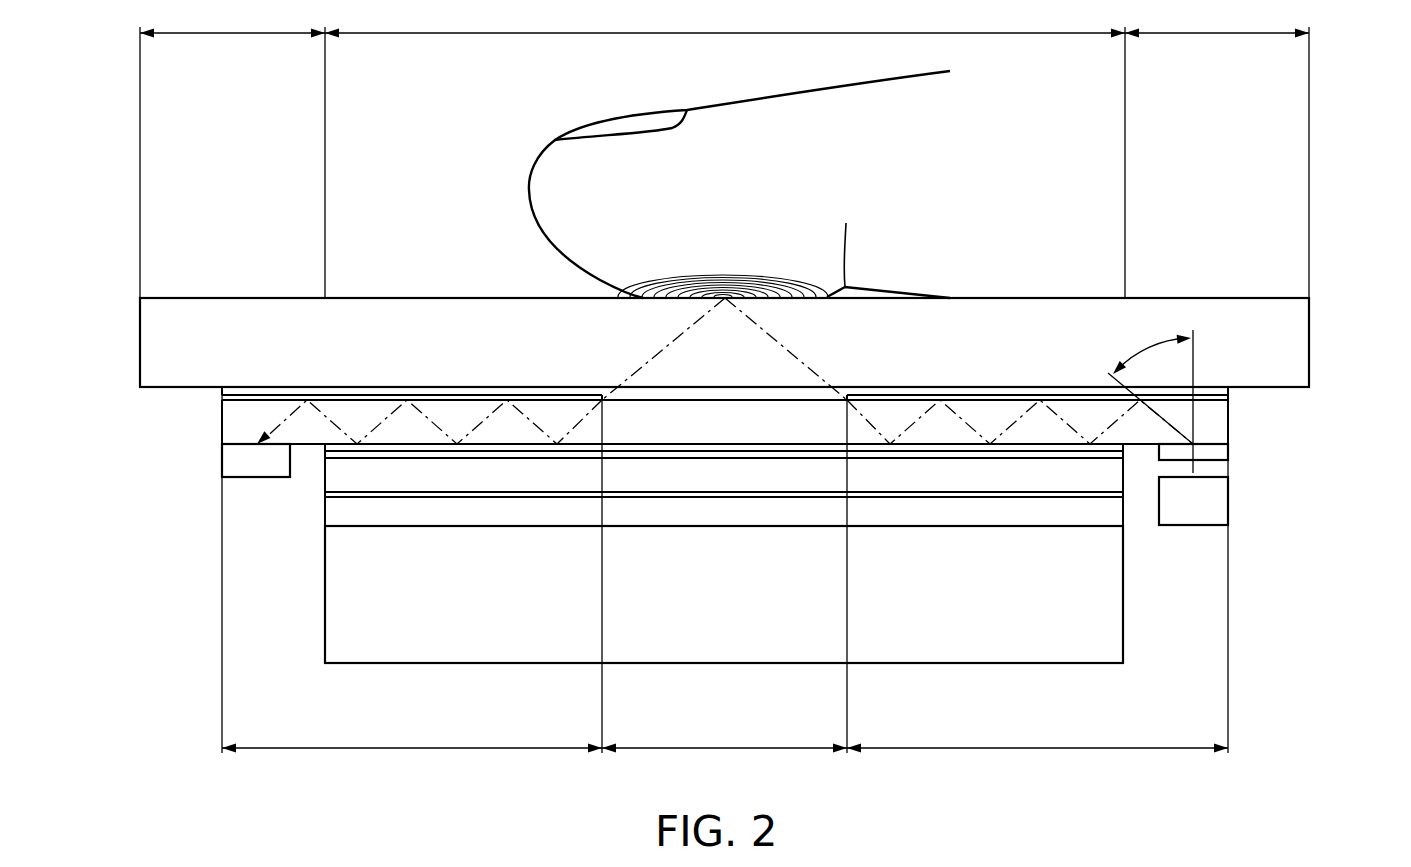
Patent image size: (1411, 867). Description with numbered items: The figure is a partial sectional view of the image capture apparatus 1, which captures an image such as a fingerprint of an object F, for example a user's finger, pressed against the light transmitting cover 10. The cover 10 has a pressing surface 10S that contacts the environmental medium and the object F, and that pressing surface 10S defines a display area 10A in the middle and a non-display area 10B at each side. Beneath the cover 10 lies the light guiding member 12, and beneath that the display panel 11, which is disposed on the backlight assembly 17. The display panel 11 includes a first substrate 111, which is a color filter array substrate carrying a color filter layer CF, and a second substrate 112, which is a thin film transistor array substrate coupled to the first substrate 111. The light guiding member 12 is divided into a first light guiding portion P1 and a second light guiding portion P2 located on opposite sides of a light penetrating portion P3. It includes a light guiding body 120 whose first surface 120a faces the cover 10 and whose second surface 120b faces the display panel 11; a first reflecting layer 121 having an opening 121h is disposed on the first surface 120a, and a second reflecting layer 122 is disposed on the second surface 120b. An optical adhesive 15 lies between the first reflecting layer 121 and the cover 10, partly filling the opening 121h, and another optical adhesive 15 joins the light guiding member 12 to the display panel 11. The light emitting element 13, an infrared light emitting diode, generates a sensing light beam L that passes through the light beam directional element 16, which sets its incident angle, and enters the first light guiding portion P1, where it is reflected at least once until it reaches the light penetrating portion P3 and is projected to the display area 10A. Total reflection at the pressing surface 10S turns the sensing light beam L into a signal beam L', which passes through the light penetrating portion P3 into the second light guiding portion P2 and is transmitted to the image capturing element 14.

The image capture apparatus 1 is at (1369, 274).
The light transmitting cover 10 is at (167, 344).
The display area 10A is at (725, 19).
The non-display area 10B is at (724, 149).
The pressing surface 10S is at (724, 252).
The display panel 11 is at (145, 572).
The first substrate 111 is at (338, 477).
The second substrate 112 is at (338, 510).
The light guiding member 12 is at (80, 395).
The light guiding body 120 is at (233, 422).
The first surface 120a is at (1238, 344).
The second surface 120b is at (1169, 514).
The first reflecting layer 121 is at (228, 397).
The opening 121h is at (667, 324).
The second reflecting layer 122 is at (327, 447).
The light emitting element 13 is at (1212, 500).
The image capturing element 14 is at (240, 459).
The optical adhesive 15 is at (327, 452).
The light beam directional element 16 is at (1212, 452).
The backlight assembly 17 is at (1077, 607).
The color filter layer CF is at (378, 494).
The object F is at (560, 210).
The sensing light beam L is at (959, 371).
The signal beam L' is at (494, 372).
The first light guiding portion P1 is at (1037, 598).
The second light guiding portion P2 is at (412, 570).
The light penetrating portion P3 is at (724, 576).